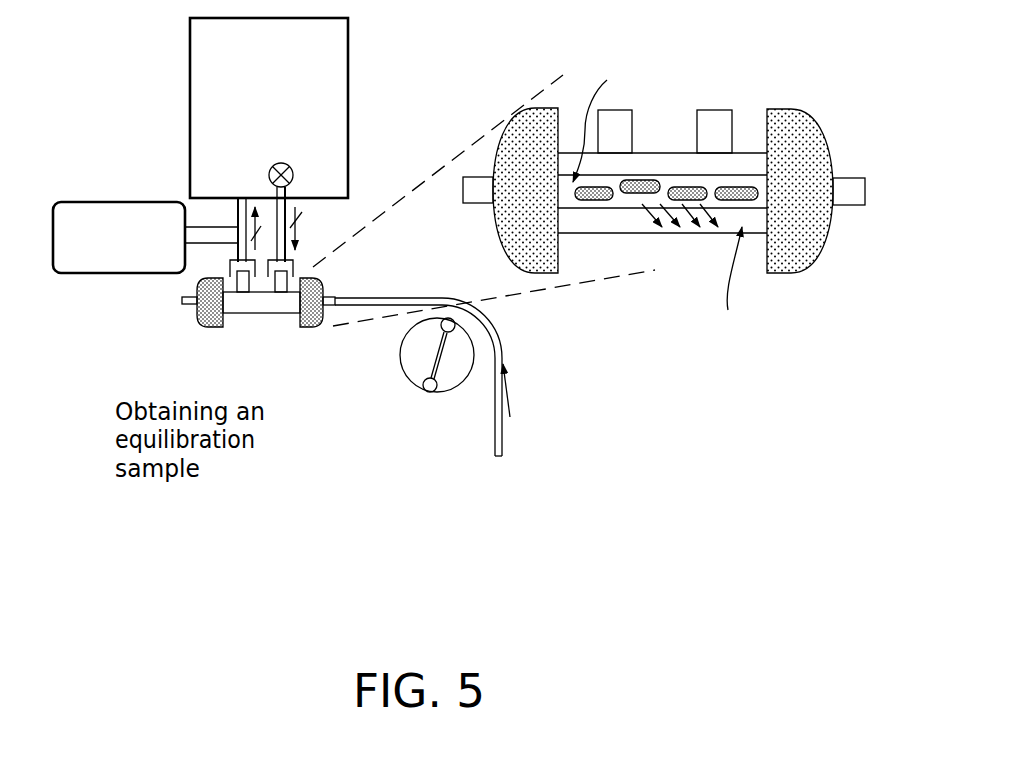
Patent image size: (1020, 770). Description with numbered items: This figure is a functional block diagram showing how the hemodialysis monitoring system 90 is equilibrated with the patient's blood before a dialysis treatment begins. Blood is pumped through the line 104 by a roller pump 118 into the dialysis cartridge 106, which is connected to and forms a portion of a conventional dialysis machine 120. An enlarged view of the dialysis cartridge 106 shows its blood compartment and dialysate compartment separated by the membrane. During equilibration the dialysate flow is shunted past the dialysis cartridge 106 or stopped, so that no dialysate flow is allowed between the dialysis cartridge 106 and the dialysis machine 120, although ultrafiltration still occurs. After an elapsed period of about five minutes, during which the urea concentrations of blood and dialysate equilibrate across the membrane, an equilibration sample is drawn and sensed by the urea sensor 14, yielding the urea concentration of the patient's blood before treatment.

The urea sensor 14 is at (118, 200).
The dialysis machine 120 is at (312, 122).
The dialysis cartridge 106 is at (240, 317).
The line 104 is at (492, 448).
The roller pump 118 is at (413, 384).
The hemodialysis monitoring system 90 is at (455, 113).